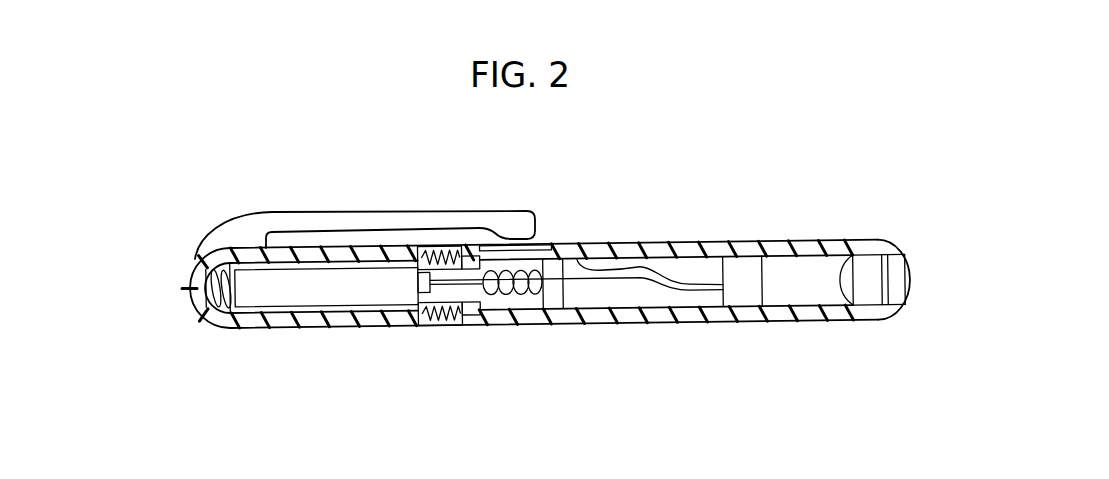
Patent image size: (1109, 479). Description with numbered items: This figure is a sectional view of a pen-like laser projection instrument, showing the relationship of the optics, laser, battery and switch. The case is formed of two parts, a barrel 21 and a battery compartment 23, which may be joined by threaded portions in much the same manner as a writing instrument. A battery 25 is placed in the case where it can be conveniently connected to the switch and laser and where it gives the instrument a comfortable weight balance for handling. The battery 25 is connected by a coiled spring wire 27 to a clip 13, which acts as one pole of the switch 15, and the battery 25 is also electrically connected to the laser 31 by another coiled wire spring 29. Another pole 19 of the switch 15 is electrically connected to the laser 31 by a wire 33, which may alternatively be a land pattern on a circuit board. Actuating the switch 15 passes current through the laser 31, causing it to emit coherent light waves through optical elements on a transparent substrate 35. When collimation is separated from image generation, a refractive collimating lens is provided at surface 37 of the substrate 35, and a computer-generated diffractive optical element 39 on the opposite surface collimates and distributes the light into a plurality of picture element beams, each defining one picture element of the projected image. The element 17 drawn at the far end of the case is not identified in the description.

The clip 13 is at (360, 213).
The switch 15 is at (537, 180).
The end cap 17 is at (903, 270).
The pole 19 is at (548, 241).
The barrel 21 is at (723, 241).
The battery compartment 23 is at (177, 308).
The battery 25 is at (288, 296).
The coiled spring wire 27 is at (208, 286).
The coiled wire spring 29 is at (510, 297).
The laser 31 is at (750, 296).
The wire 33 is at (658, 268).
The transparent substrate 35 is at (871, 290).
The surface 37 is at (846, 291).
The diffractive optical element 39 is at (888, 283).